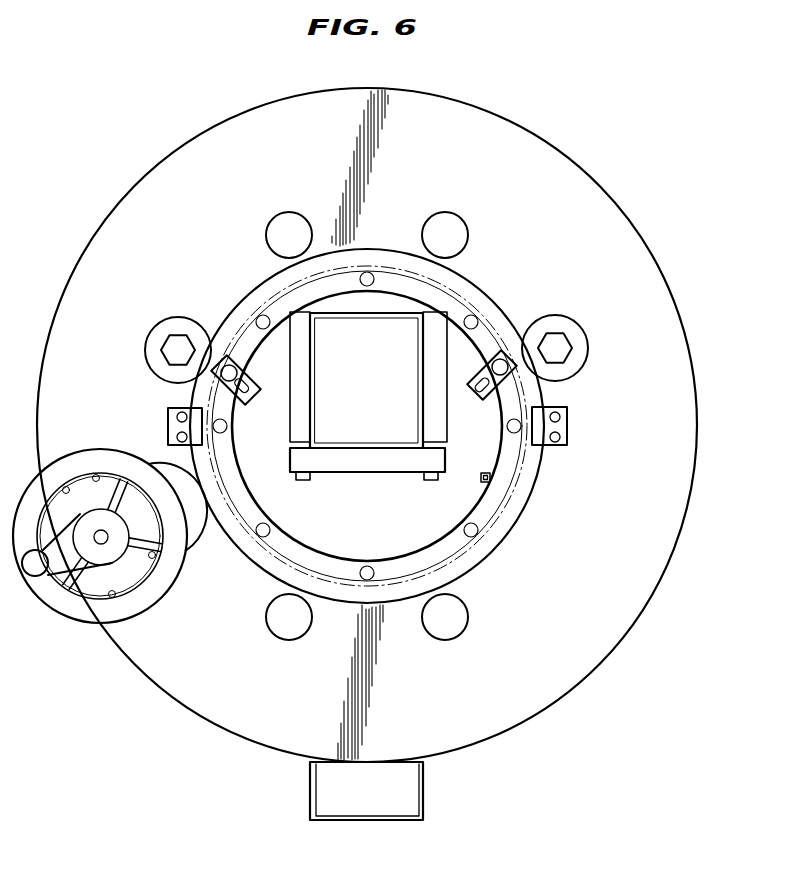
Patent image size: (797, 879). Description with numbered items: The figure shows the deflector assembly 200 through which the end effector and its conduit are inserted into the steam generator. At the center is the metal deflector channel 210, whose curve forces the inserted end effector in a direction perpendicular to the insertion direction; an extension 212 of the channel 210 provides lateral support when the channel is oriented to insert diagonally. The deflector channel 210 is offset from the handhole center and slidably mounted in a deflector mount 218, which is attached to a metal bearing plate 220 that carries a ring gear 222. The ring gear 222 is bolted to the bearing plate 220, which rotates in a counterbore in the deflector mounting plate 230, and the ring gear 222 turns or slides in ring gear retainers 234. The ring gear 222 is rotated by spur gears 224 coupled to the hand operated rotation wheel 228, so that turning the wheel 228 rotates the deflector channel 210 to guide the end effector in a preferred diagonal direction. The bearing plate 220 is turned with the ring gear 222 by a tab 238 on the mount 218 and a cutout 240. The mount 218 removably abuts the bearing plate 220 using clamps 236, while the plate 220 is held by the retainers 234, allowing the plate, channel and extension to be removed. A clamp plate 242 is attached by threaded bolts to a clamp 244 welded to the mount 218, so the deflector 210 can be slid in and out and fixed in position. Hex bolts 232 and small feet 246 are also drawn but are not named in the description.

The deflector assembly 200 is at (182, 770).
The deflector channel 210 is at (318, 376).
The extension 212 is at (424, 795).
The deflector mount 218 is at (362, 488).
The bearing plate 220 is at (302, 537).
The ring gear 222 is at (392, 582).
The spur gear 224 is at (142, 455).
The hand operated rotation wheel 228 is at (90, 623).
The deflector mounting plate 230 is at (676, 305).
The hex head bolt 232 is at (164, 322).
The ring gear retainer 234 is at (172, 408).
The clamp 236 is at (233, 358).
The tab 238 is at (503, 488).
The cutout 240 is at (481, 476).
The clamp plate 242 is at (332, 472).
The clamp 244 is at (290, 429).
The support foot 246 is at (296, 478).